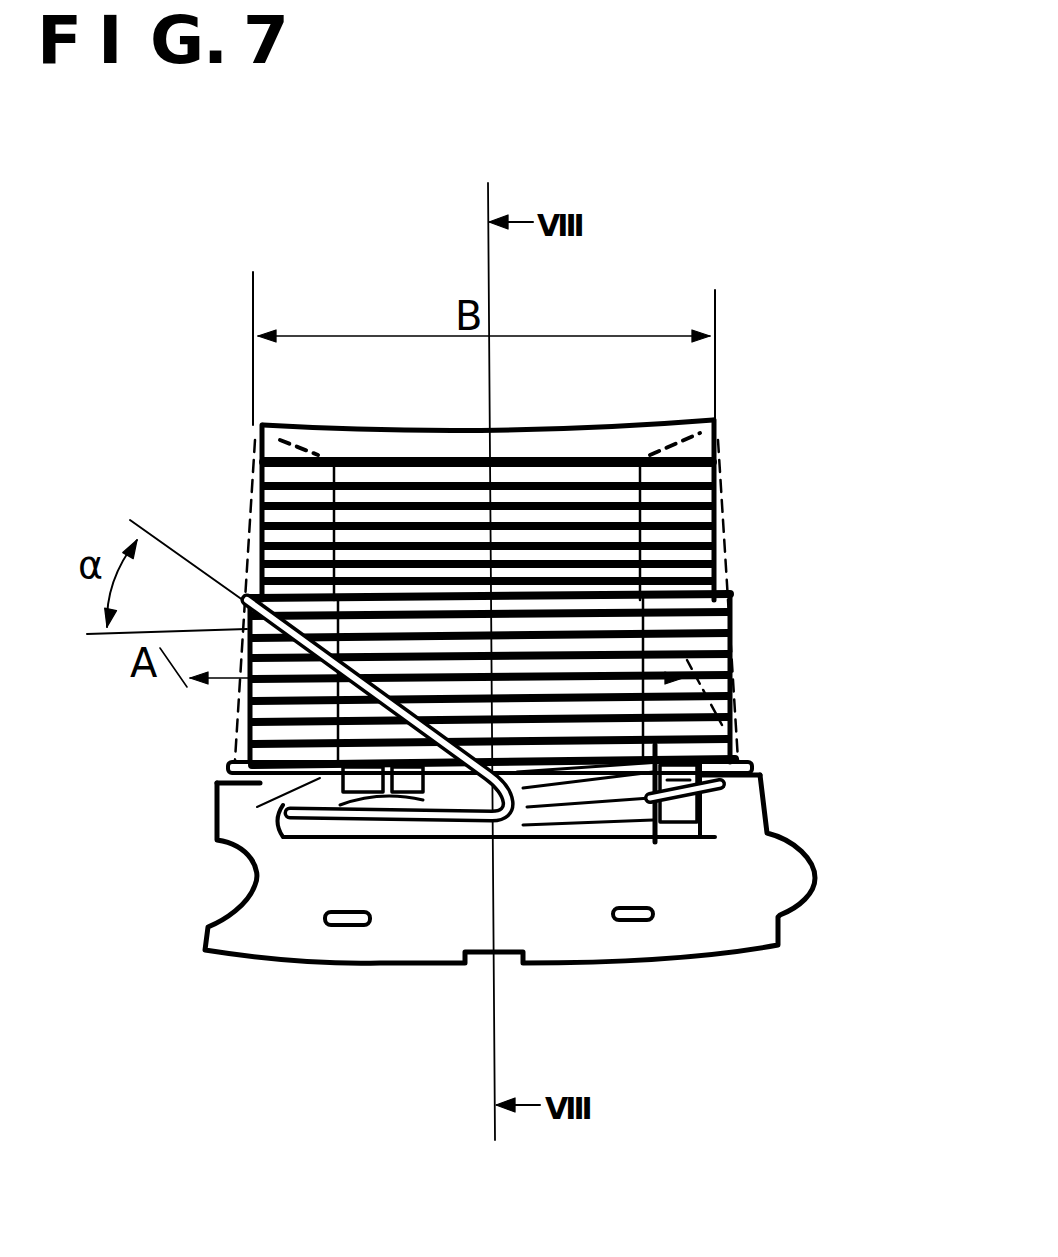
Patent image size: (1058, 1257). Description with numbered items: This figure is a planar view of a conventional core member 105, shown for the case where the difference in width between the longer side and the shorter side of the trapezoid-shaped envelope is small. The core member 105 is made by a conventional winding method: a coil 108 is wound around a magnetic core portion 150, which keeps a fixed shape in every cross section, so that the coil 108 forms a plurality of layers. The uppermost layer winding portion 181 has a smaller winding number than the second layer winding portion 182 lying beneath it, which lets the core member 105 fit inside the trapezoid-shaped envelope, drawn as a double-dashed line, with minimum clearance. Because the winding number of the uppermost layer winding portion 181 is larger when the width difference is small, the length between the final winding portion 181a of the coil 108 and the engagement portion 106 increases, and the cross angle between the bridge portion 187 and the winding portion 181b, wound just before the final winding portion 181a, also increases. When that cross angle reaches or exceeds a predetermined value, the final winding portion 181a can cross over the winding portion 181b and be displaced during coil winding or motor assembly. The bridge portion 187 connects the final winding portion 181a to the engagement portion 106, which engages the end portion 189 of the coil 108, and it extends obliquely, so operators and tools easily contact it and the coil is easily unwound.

The core member 105 is at (192, 402).
The engagement portion 106 is at (493, 840).
The coil 108 is at (765, 562).
The magnetic core portion 150 is at (640, 525).
The uppermost layer winding portion 181 is at (745, 702).
The final winding portion 181a is at (245, 603).
The winding portion 181b is at (690, 603).
The second layer winding portion 182 is at (745, 418).
The bridge portion 187 is at (320, 770).
The end portion 189 is at (363, 822).